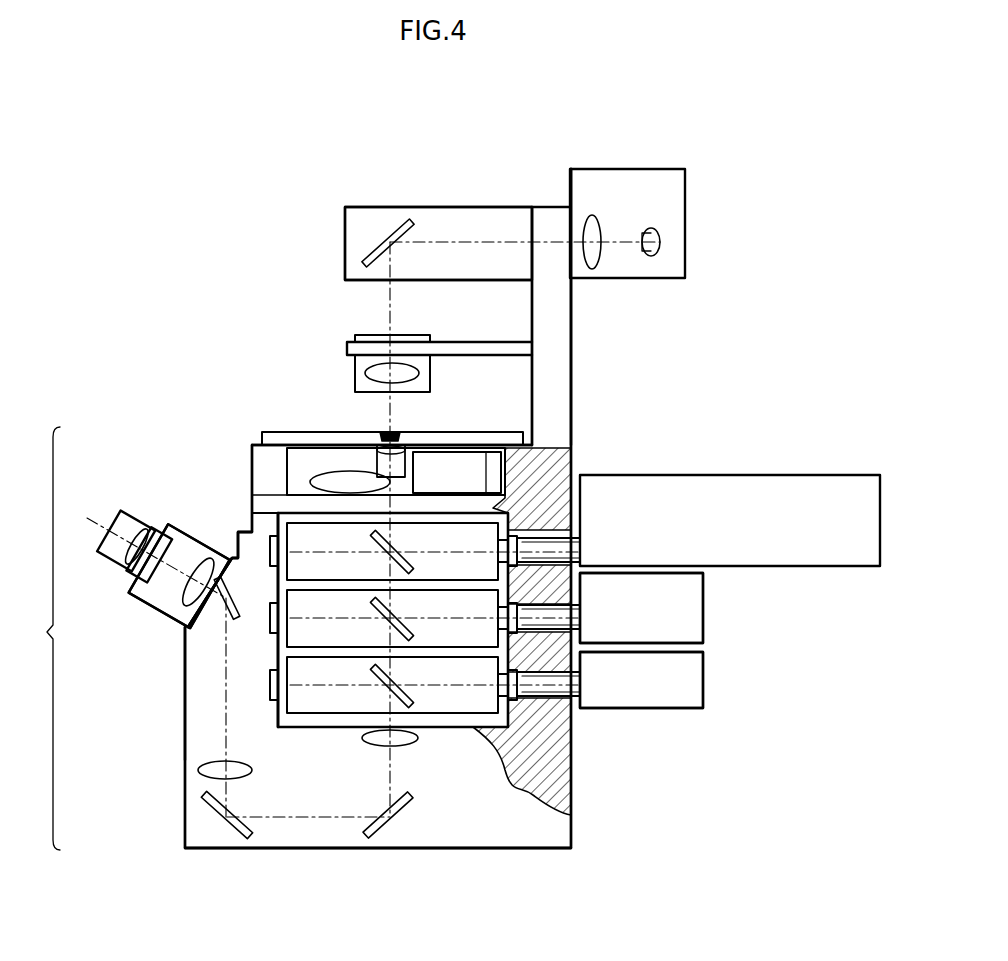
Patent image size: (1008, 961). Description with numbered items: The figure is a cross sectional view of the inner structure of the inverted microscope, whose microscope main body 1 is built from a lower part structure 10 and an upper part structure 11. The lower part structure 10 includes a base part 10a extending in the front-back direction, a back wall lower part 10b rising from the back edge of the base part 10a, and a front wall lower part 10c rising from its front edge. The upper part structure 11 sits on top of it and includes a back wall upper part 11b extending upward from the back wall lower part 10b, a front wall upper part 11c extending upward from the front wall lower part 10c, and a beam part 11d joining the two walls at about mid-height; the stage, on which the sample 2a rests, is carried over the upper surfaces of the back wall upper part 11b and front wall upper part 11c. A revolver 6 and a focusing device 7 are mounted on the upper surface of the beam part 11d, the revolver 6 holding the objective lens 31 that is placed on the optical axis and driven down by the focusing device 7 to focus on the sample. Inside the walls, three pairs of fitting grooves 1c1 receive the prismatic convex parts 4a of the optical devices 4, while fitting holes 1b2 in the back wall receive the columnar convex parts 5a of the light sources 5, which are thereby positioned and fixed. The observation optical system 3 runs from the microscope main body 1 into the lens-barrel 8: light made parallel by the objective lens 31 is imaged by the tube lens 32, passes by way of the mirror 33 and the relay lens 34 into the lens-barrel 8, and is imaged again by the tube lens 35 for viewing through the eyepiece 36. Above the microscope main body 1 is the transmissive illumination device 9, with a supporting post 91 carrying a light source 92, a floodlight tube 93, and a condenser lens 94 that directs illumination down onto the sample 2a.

The microscope main body 1 is at (528, 855).
The sample 2a is at (400, 432).
The observation optical system 3 is at (43, 638).
The optical device 4 is at (485, 535).
The convex part 4a is at (500, 554).
The light source 5 is at (812, 490).
The convex part 5a is at (543, 612).
The revolver 6 is at (347, 481).
The focusing device 7 is at (468, 466).
The lens-barrel 8 is at (205, 521).
The transmissive illumination device 9 is at (616, 166).
The lower part structure 10 is at (183, 755).
The base part 10a is at (462, 823).
The back wall lower part 10b is at (535, 718).
The front wall lower part 10c is at (185, 694).
The upper part structure 11 is at (249, 452).
The back wall upper part 11b is at (568, 460).
The front wall upper part 11c is at (251, 472).
The beam part 11d is at (337, 503).
The fitting hole 1b2 is at (573, 742).
The fitting groove 1c1 is at (275, 706).
The objective lens 31 is at (381, 432).
The tube lens 32 is at (420, 745).
The mirror 33 is at (225, 620).
The relay lens 34 is at (205, 777).
The tube lens 35 is at (170, 614).
The eyepiece 36 is at (122, 572).
The supporting post 91 is at (565, 313).
The light source 92 is at (686, 185).
The floodlight tube 93 is at (437, 212).
The condenser lens 94 is at (365, 372).